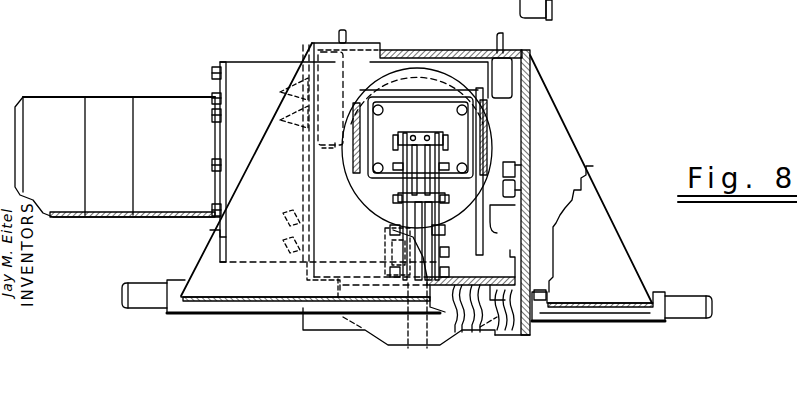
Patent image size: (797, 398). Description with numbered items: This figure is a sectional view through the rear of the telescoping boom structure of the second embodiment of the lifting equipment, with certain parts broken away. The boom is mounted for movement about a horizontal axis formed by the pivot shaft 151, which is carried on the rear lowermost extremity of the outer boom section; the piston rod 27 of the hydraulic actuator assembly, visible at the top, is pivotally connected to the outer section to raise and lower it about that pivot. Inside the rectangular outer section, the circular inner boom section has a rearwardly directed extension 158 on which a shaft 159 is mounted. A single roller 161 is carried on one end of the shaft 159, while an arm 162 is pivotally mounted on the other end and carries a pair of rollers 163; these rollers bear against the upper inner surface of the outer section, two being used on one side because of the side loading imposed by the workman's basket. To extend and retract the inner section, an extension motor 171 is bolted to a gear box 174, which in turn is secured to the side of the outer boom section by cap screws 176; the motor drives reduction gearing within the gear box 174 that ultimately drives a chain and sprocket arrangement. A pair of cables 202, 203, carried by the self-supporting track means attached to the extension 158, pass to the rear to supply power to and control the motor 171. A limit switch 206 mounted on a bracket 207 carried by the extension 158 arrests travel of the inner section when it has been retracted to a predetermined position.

The piston rod 27 is at (553, 4).
The pivot shaft 151 is at (180, 280).
The extension 158 is at (421, 88).
The shaft 159 is at (480, 70).
The roller 161 is at (503, 88).
The arm 162 is at (358, 46).
The rollers 163 is at (322, 148).
The extension motor 171 is at (68, 108).
The gear box 174 is at (264, 131).
The cap screws 176 is at (292, 190).
The cable 202 is at (413, 133).
The cable 203 is at (427, 133).
The limit switch 206 is at (497, 233).
The bracket 207 is at (482, 240).